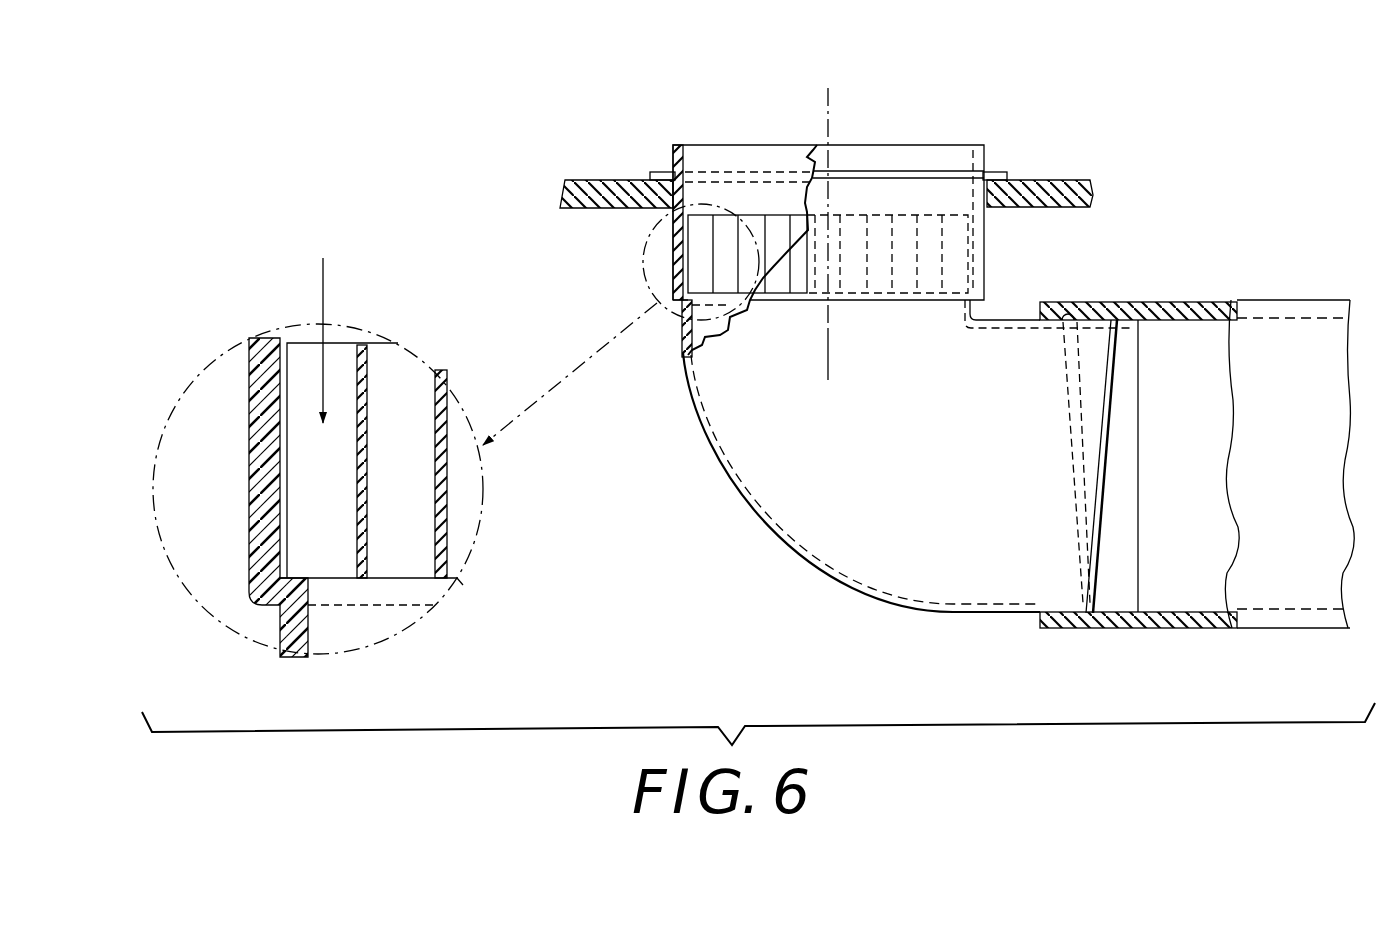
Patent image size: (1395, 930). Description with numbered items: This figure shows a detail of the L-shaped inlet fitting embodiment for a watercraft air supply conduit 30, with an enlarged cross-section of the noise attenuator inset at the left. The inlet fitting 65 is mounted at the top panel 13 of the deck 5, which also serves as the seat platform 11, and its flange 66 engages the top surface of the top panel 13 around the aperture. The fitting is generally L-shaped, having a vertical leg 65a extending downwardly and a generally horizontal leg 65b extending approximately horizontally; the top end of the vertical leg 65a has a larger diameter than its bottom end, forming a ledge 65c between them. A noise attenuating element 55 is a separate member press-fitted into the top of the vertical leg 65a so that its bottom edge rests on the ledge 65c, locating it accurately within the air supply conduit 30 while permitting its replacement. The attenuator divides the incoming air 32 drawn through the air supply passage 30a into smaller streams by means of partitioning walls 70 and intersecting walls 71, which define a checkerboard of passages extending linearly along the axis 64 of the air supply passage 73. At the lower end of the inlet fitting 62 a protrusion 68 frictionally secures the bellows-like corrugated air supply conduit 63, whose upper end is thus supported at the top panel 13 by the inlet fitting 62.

The deck 5 is at (607, 160).
The seat platform 11 is at (1063, 173).
The top panel 13 is at (1018, 176).
The air supply conduit 30 is at (1178, 192).
The air supply passage 30a is at (1205, 423).
The air 32 is at (322, 285).
The noise attenuating element 55 is at (776, 211).
The inlet fitting 62 is at (868, 142).
The air supply conduit 63 is at (1277, 293).
The axis 64 is at (827, 340).
The inlet fitting 65 is at (897, 158).
The vertical leg 65a is at (987, 240).
The horizontal leg 65b is at (1098, 353).
The ledge 65c is at (874, 303).
The flange 66 is at (942, 168).
The protrusion 68 is at (1103, 513).
The partitioning walls 70 is at (368, 473).
The walls 71 is at (463, 530).
The air supply passage 73 is at (417, 544).